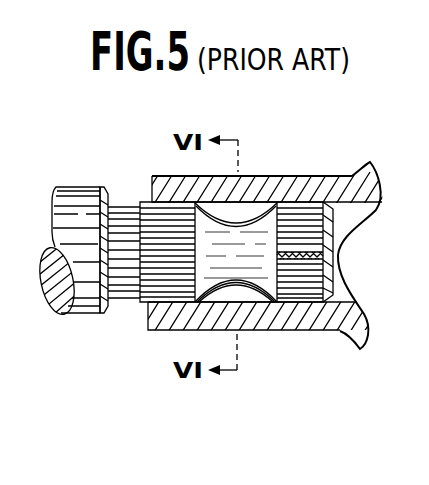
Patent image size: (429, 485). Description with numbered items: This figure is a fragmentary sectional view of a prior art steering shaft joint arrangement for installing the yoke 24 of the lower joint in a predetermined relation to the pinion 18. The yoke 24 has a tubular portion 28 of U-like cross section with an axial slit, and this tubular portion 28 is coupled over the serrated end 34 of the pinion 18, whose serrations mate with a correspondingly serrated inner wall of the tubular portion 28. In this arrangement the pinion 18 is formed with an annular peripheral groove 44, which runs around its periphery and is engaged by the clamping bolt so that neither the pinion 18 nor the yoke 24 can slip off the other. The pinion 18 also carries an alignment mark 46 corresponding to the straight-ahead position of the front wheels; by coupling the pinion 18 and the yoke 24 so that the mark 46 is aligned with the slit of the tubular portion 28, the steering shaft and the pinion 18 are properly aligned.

The pinion 18 is at (115, 316).
The yoke 24 is at (338, 163).
The tubular portion 28 is at (265, 312).
The serrated end 34 is at (303, 290).
The annular peripheral groove 44 is at (266, 214).
The alignment mark 46 is at (324, 256).